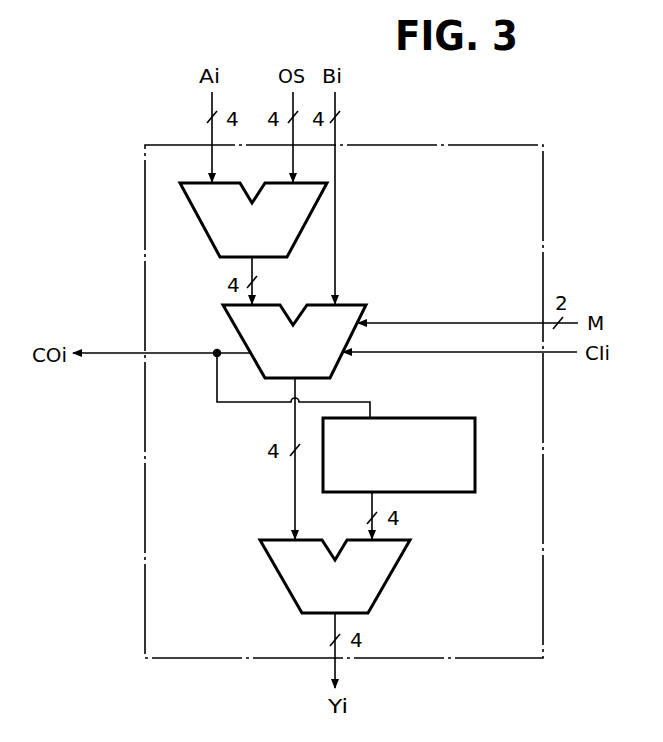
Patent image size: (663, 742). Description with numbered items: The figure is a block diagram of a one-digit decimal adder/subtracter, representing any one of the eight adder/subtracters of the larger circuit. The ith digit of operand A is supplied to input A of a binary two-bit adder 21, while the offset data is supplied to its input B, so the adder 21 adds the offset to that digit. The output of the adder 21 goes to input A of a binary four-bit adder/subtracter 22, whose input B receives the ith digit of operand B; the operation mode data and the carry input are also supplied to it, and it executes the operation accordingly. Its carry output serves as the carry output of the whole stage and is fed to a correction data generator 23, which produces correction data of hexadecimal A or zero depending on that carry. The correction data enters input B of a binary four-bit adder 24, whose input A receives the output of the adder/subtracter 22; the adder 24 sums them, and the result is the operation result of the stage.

The binary 2-bit adder 21 is at (201, 222).
The binary 4-bit adder/subtracter 22 is at (336, 368).
The correction data generator 23 is at (476, 455).
The binary 4-bit adder 24 is at (390, 577).